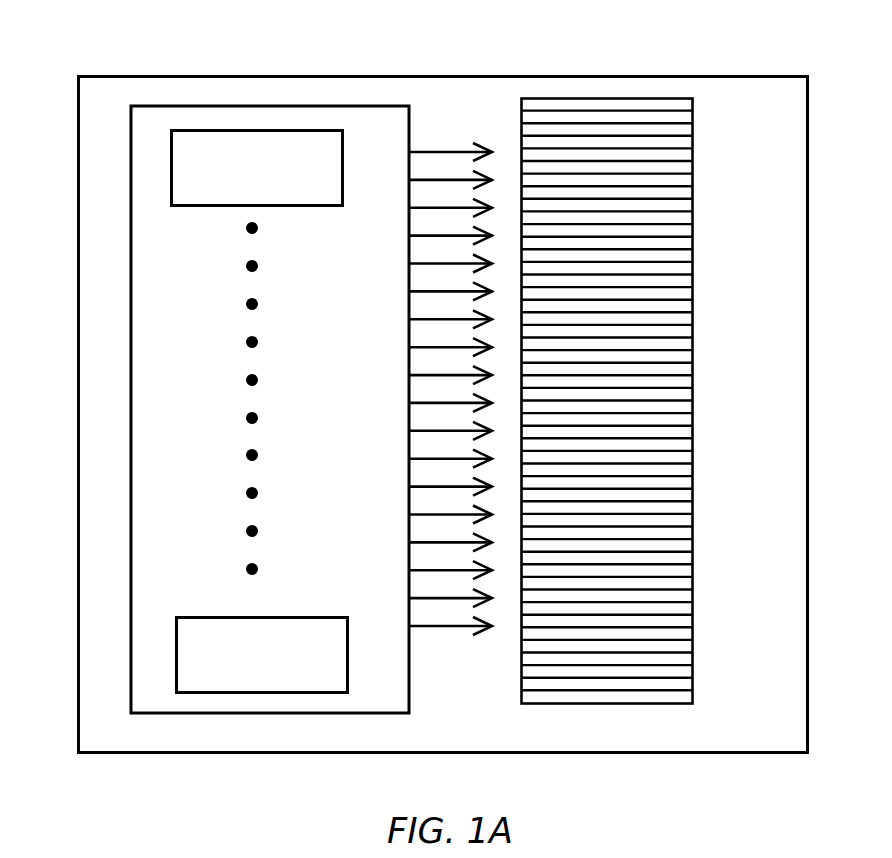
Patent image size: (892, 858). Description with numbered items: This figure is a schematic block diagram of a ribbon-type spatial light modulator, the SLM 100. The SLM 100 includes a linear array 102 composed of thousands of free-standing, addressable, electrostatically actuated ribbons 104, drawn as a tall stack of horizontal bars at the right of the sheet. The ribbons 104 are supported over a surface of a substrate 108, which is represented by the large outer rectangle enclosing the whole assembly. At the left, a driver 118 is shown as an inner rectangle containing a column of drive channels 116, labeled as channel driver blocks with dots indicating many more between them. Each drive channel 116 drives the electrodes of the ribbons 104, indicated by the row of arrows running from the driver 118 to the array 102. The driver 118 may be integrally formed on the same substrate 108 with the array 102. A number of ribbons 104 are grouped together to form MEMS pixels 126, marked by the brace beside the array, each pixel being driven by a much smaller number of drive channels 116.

The SLM 100 is at (146, 36).
The linear array 102 is at (584, 80).
The ribbons 104 is at (522, 104).
The substrate 108 is at (768, 730).
The drive channel 116 is at (247, 131).
The driver 118 is at (333, 512).
The MEMS pixels 126 is at (693, 174).